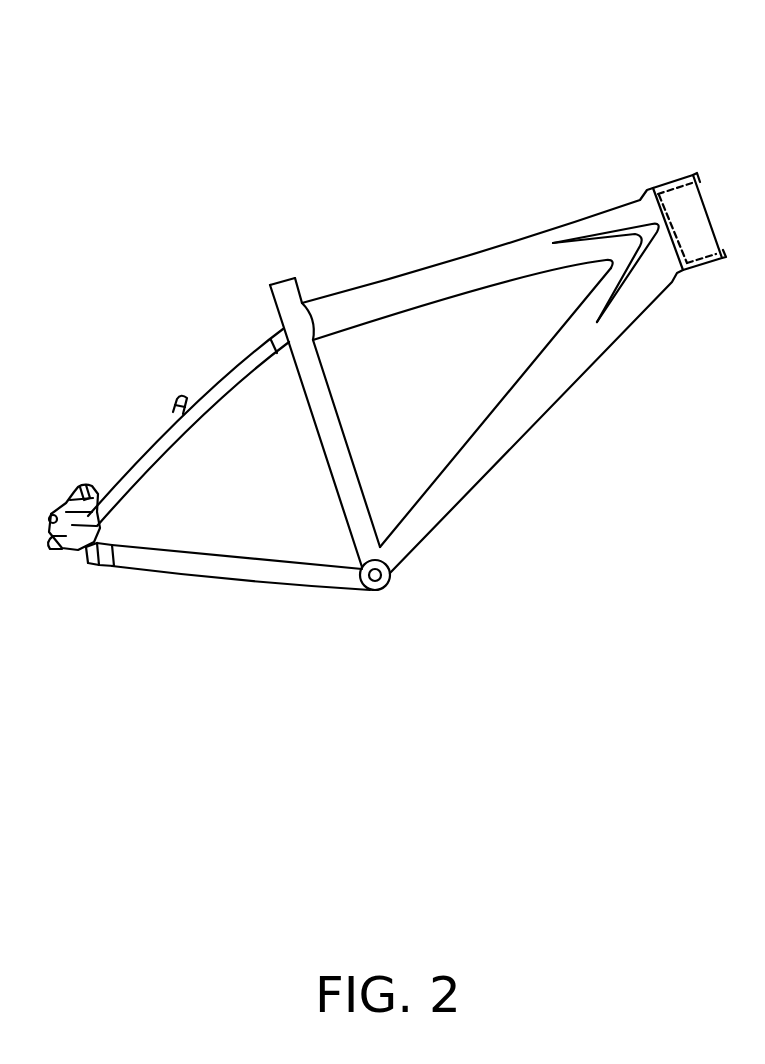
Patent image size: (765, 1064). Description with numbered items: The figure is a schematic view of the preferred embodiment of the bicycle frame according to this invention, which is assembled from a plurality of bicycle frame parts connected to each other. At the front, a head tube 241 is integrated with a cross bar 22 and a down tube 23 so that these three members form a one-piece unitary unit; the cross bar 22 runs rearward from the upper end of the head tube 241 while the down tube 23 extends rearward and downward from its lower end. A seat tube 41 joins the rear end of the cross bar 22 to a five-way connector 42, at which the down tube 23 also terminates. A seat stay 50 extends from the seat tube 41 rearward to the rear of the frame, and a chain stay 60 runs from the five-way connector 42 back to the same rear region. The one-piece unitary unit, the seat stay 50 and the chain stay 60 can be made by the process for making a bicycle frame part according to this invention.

The cross bar 22 is at (447, 259).
The down tube 23 is at (503, 454).
The head tube 241 is at (705, 217).
The seat tube 41 is at (339, 418).
The five-way connector 42 is at (386, 589).
The seat stay 50 is at (212, 388).
The chain stay 60 is at (250, 584).